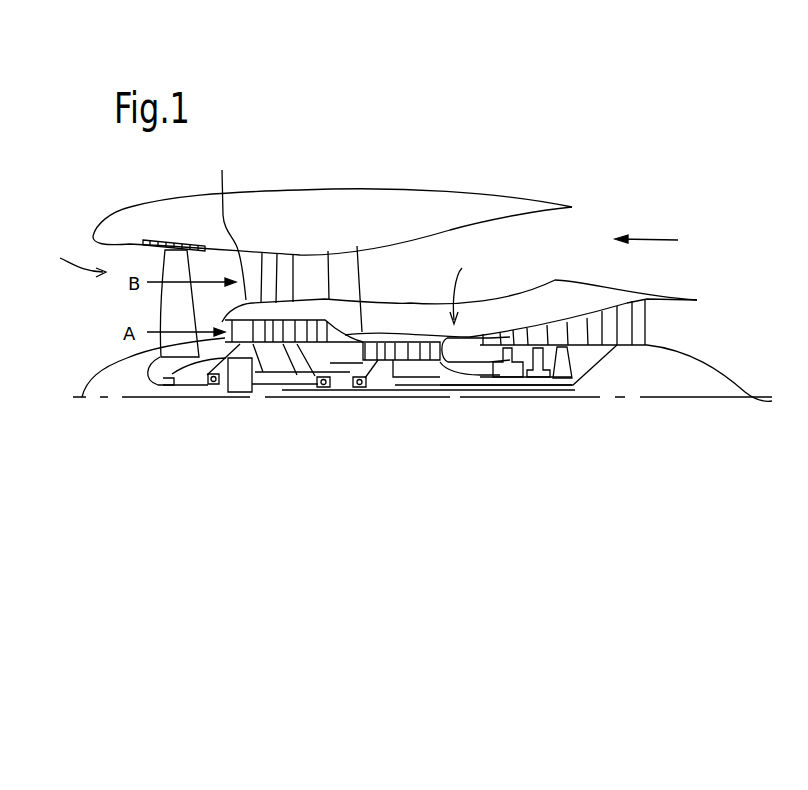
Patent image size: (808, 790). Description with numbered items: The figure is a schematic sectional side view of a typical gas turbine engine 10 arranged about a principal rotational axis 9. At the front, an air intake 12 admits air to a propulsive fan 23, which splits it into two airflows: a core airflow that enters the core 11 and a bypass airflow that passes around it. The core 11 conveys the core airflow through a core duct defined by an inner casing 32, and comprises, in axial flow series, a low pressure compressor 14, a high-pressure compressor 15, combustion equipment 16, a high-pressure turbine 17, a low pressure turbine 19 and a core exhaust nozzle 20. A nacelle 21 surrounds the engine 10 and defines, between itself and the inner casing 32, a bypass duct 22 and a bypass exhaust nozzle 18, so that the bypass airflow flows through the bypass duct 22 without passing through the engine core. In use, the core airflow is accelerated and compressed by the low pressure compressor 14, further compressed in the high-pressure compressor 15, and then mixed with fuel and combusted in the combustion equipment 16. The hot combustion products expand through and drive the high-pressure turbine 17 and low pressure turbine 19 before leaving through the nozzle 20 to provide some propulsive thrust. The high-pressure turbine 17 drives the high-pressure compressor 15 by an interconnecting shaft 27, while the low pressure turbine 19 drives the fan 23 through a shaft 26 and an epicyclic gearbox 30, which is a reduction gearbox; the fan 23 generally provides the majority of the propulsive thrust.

The principal rotational axis 9 is at (615, 399).
The gas turbine engine 10 is at (321, 207).
The core 11 is at (468, 288).
The air intake 12 is at (67, 264).
The low pressure compressor 14 is at (297, 292).
The high-pressure compressor 15 is at (404, 334).
The combustion equipment 16 is at (472, 353).
The high-pressure turbine 17 is at (520, 336).
The bypass exhaust nozzle 18 is at (659, 241).
The low pressure turbine 19 is at (626, 315).
The core exhaust nozzle 20 is at (678, 329).
The nacelle 21 is at (348, 206).
The bypass duct 22 is at (553, 251).
The propulsive fan 23 is at (165, 309).
The shaft 26 is at (407, 390).
The interconnecting shaft 27 is at (440, 378).
The epicyclic gearbox 30 is at (240, 372).
The inner casing 32 is at (229, 224).